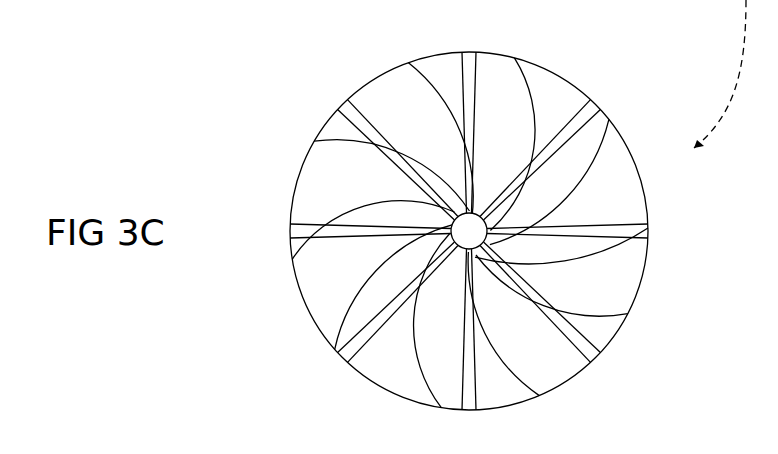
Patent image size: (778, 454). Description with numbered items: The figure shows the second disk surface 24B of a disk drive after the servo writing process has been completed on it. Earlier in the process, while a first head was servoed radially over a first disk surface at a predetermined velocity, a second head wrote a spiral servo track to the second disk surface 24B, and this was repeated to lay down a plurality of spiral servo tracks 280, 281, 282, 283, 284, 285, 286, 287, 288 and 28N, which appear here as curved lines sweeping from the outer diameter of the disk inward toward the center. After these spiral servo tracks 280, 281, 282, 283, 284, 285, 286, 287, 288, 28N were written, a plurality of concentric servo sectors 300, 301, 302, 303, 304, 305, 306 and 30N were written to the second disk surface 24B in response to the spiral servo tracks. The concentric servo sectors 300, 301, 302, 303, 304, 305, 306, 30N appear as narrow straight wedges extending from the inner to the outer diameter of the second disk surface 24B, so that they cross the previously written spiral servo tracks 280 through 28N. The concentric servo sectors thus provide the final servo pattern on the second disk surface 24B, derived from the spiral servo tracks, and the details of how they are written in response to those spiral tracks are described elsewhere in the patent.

The second disk surface 24B is at (589, 91).
The spiral servo track 280 is at (533, 87).
The spiral servo track 281 is at (609, 140).
The spiral servo track 282 is at (653, 216).
The spiral servo track 283 is at (603, 317).
The spiral servo track 284 is at (525, 382).
The spiral servo track 285 is at (423, 378).
The spiral servo track 286 is at (325, 333).
The spiral servo track 287 is at (290, 256).
The spiral servo track 288 is at (328, 133).
The spiral servo track 28N is at (414, 67).
The concentric servo sector 300 is at (473, 53).
The concentric servo sector 301 is at (600, 107).
The concentric servo sector 302 is at (652, 244).
The concentric servo sector 303 is at (591, 364).
The concentric servo sector 304 is at (466, 408).
The concentric servo sector 305 is at (341, 358).
The concentric servo sector 306 is at (289, 225).
The concentric servo sector 30N is at (345, 107).